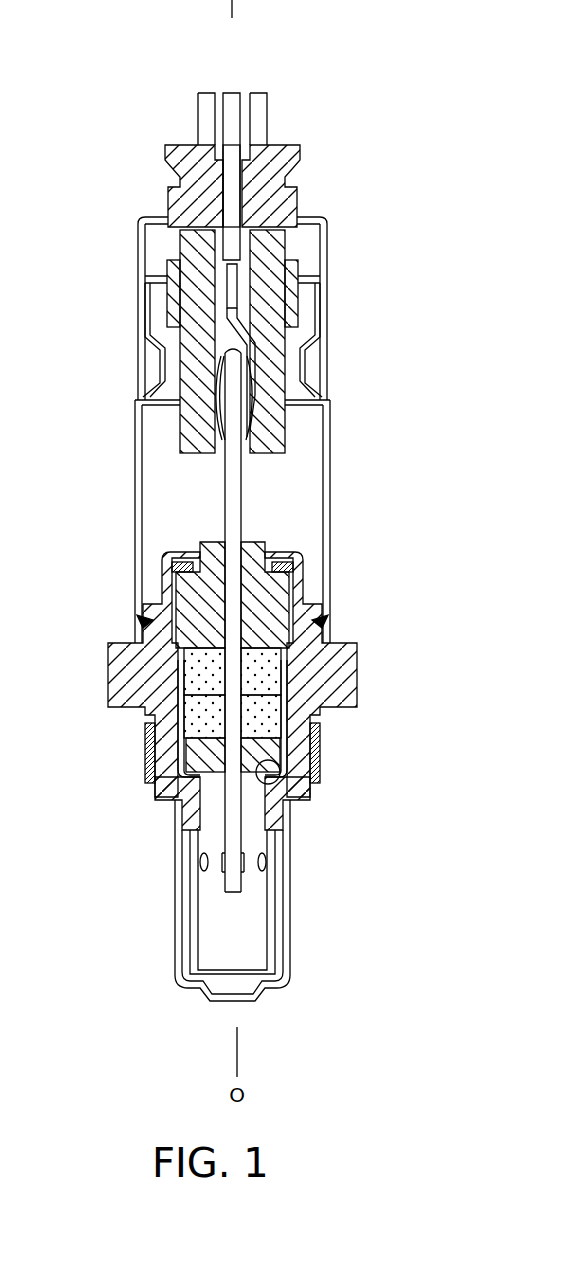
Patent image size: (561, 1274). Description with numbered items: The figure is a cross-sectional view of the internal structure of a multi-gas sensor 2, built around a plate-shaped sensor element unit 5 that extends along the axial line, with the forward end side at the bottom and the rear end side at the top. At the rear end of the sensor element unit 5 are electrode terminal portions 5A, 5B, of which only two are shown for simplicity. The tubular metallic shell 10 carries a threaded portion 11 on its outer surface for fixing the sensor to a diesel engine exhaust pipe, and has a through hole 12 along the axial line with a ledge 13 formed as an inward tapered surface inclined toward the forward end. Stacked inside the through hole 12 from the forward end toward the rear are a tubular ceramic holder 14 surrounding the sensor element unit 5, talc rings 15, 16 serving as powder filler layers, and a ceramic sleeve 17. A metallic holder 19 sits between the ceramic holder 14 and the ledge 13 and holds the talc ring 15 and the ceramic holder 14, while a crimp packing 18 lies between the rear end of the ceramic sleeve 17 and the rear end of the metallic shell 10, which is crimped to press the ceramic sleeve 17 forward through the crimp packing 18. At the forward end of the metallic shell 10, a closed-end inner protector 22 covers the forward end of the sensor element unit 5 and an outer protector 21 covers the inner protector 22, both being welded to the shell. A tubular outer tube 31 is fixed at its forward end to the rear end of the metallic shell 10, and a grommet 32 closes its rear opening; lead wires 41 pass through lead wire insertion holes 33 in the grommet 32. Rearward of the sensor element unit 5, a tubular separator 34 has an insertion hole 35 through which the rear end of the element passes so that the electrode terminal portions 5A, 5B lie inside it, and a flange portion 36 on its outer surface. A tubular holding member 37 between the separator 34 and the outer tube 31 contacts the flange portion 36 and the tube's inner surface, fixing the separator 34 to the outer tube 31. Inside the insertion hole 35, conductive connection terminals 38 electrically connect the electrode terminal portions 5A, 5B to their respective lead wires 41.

The multi-gas sensor 2 is at (311, 134).
The sensor element unit 5 is at (245, 678).
The electrode terminal portion 5A is at (242, 455).
The electrode terminal portion 5B is at (224, 455).
The metallic shell 10 is at (108, 680).
The threaded portion 11 is at (145, 753).
The through hole 12 is at (212, 820).
The ledge 13 is at (278, 828).
The ceramic holder 14 is at (288, 752).
The talc ring 15 is at (290, 715).
The talc ring 16 is at (293, 660).
The ceramic sleeve 17 is at (293, 603).
The crimp packing 18 is at (297, 570).
The metallic holder 19 is at (277, 778).
The outer protector 21 is at (293, 890).
The inner protector 22 is at (263, 996).
The outer tube 31 is at (325, 375).
The grommet 32 is at (287, 190).
The lead wire insertion hole 33 is at (232, 196).
The separator 34 is at (180, 355).
The insertion hole 35 is at (218, 325).
The flange portion 36 is at (168, 262).
The holding member 37 is at (313, 268).
The connection terminal 38 is at (215, 408).
The lead wire 41 is at (198, 113).